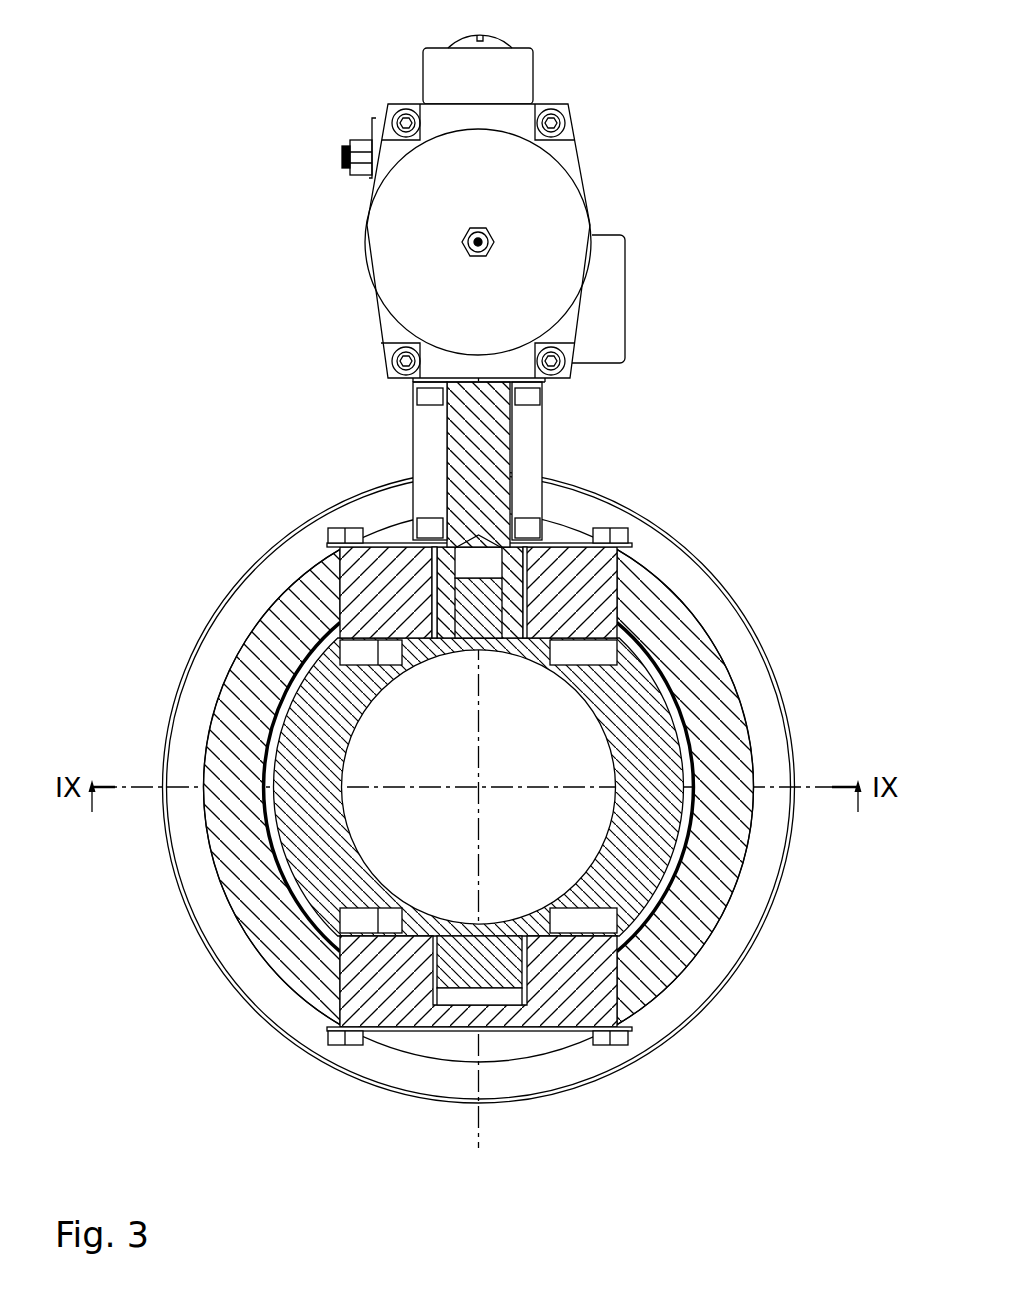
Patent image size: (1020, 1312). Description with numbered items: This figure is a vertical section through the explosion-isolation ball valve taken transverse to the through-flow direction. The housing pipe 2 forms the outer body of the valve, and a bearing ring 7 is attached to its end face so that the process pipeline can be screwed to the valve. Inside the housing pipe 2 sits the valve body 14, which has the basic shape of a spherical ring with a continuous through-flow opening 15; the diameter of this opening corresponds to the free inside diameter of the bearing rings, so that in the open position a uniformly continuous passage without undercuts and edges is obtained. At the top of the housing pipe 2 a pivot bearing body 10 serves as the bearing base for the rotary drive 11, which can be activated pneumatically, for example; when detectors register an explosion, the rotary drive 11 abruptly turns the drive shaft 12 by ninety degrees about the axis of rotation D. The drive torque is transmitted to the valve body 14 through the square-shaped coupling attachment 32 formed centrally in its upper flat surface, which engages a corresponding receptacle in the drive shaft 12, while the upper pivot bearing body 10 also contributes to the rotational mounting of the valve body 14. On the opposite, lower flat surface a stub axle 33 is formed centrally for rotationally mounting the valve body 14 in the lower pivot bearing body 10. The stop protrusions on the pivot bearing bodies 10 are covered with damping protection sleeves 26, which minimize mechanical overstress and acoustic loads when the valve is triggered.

The housing pipe 2 is at (733, 715).
The bearing ring 7 is at (772, 750).
The pivot bearing body 10 is at (558, 535).
The rotary drive 11 is at (596, 221).
The drive shaft 12 is at (455, 438).
The valve body 14 is at (684, 846).
The through-flow opening 15 is at (378, 818).
The damping protection sleeve 26 is at (377, 647).
The coupling attachment 32 is at (493, 618).
The stub axle 33 is at (460, 975).
The axis of rotation D is at (480, 1088).